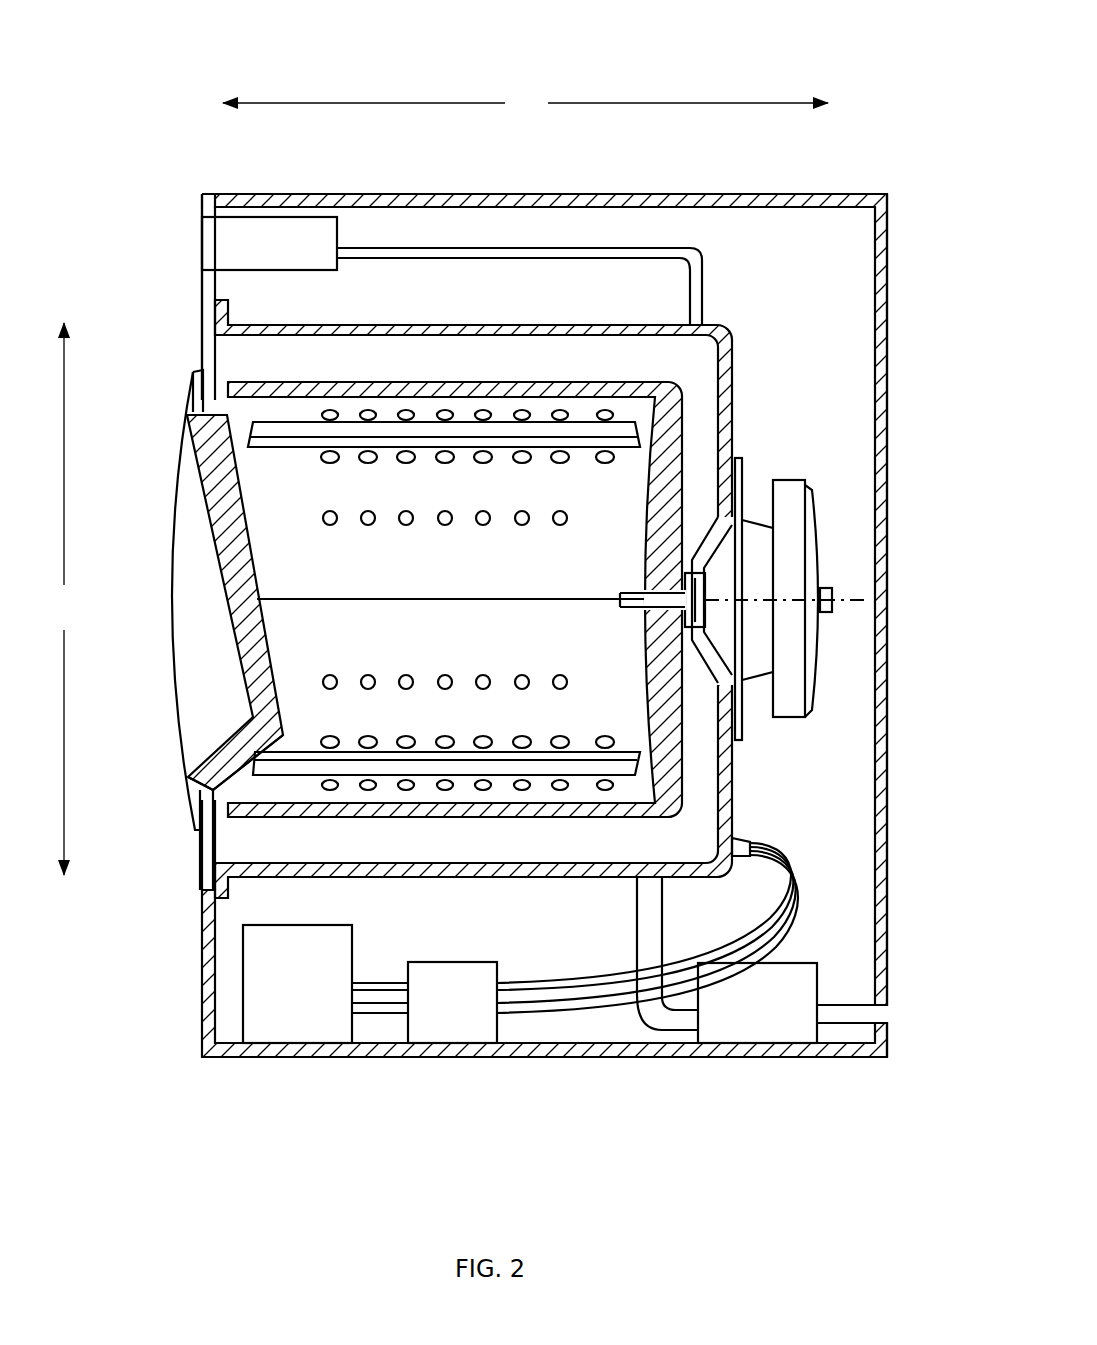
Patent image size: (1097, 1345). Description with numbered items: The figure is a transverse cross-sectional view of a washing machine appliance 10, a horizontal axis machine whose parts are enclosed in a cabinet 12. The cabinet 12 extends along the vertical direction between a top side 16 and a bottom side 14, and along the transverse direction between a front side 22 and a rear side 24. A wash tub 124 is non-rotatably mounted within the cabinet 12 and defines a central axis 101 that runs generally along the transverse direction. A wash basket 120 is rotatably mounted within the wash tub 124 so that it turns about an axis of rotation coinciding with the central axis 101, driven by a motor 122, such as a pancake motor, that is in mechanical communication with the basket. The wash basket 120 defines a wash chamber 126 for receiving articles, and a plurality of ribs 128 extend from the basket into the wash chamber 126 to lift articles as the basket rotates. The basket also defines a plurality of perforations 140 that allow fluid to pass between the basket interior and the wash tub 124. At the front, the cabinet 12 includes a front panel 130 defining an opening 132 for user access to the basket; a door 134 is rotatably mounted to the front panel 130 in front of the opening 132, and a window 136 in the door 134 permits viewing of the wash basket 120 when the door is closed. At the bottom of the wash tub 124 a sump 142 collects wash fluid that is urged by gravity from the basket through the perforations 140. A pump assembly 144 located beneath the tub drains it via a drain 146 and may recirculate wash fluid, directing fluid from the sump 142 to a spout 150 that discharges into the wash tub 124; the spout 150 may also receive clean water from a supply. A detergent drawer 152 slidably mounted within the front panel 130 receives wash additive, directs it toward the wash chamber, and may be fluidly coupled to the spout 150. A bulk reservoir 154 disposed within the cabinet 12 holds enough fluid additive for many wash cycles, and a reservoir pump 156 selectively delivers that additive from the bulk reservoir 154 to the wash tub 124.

The washing machine appliance 10 is at (170, 78).
The cabinet 12 is at (890, 710).
The bottom side 14 is at (897, 1040).
The top side 16 is at (897, 186).
The front side 22 is at (197, 186).
The rear side 24 is at (893, 380).
The central axis 101 is at (862, 602).
The wash basket 120 is at (443, 380).
The motor 122 is at (797, 526).
The wash tub 124 is at (735, 408).
The wash chamber 126 is at (295, 552).
The ribs 128 is at (337, 598).
The front panel 130 is at (212, 882).
The opening 132 is at (222, 410).
The door 134 is at (187, 650).
The window 136 is at (222, 742).
The perforations 140 is at (560, 527).
The sump 142 is at (700, 838).
The pump assembly 144 is at (752, 1030).
The drain 146 is at (640, 875).
The spout 150 is at (705, 292).
The detergent drawer 152 is at (297, 232).
The bulk reservoir 154 is at (285, 1025).
The reservoir pump 156 is at (445, 1028).